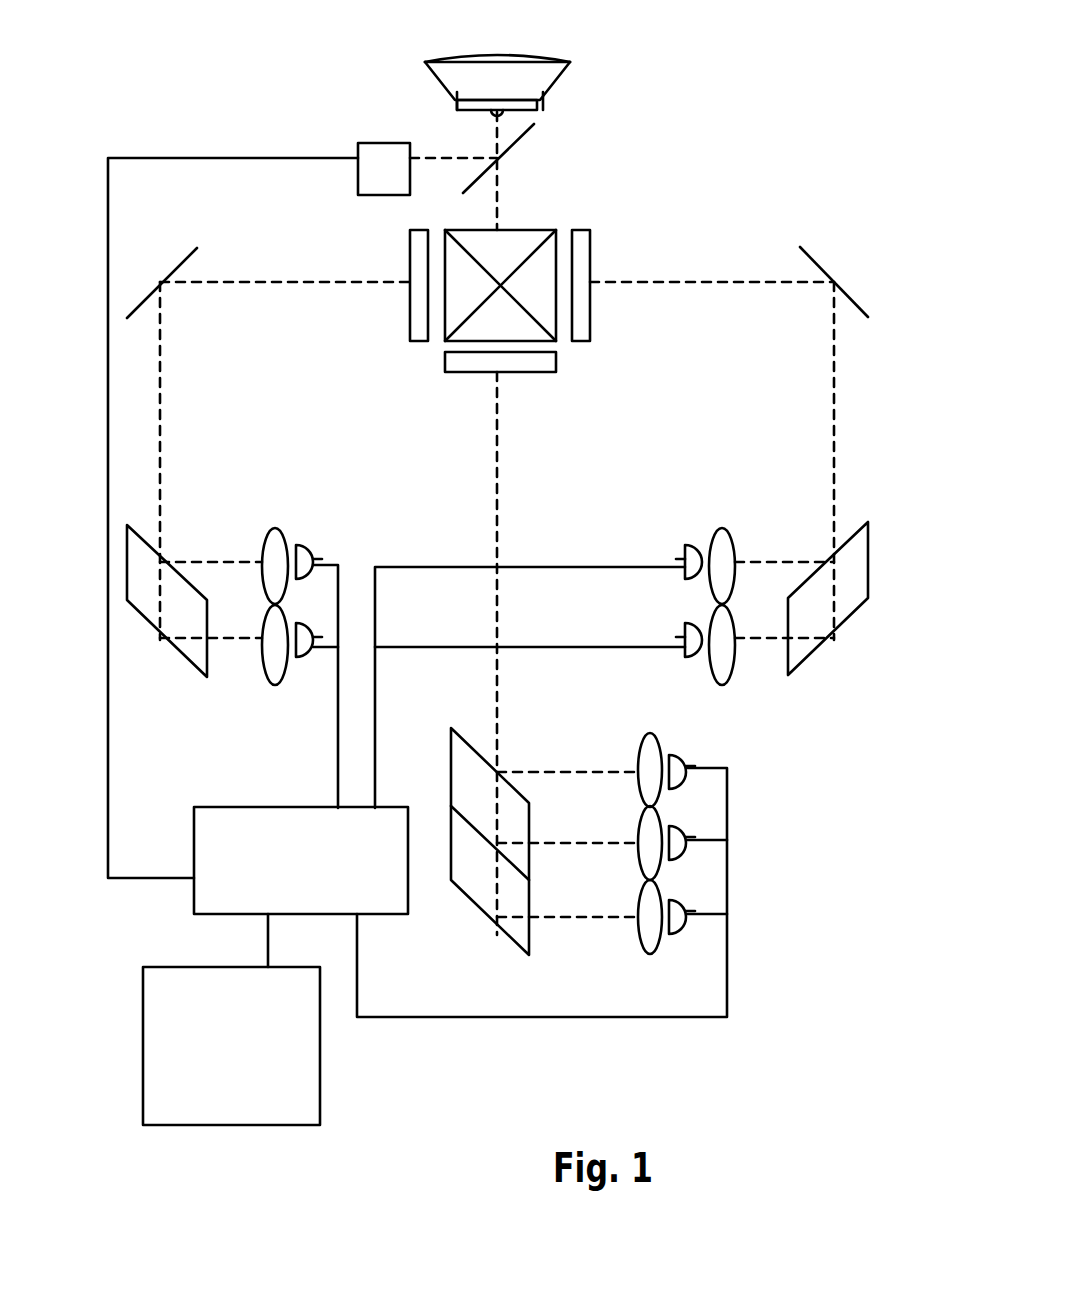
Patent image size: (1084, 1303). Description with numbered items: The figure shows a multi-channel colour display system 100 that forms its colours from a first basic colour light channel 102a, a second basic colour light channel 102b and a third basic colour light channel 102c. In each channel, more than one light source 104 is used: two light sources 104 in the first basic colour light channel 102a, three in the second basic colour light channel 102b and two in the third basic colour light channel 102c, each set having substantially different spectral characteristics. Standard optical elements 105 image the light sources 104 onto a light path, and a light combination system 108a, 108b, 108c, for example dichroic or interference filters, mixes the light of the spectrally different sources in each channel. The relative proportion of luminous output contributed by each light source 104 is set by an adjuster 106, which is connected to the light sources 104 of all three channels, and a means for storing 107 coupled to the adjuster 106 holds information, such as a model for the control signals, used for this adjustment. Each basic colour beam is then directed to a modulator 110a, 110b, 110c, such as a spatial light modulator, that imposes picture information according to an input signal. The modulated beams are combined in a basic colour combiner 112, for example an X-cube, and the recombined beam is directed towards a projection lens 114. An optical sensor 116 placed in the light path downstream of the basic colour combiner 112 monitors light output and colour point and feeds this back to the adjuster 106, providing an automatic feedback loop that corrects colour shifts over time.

The display system 100 is at (735, 66).
The first basic colour light channel 102a is at (248, 470).
The second basic colour light channel 102b is at (577, 736).
The third basic colour light channel 102c is at (650, 466).
The light sources 104 is at (302, 640).
The optical elements 105 is at (266, 592).
The adjuster 106 is at (214, 825).
The means for storing 107 is at (303, 1053).
The light combination system 108a is at (143, 620).
The light combination system 108b is at (462, 897).
The light combination system 108c is at (797, 668).
The modulator 110a is at (407, 338).
The modulator 110b is at (515, 372).
The modulator 110c is at (583, 317).
The basic colour combiner 112 is at (532, 230).
The projection lens 114 is at (552, 73).
The optical sensor 116 is at (375, 143).